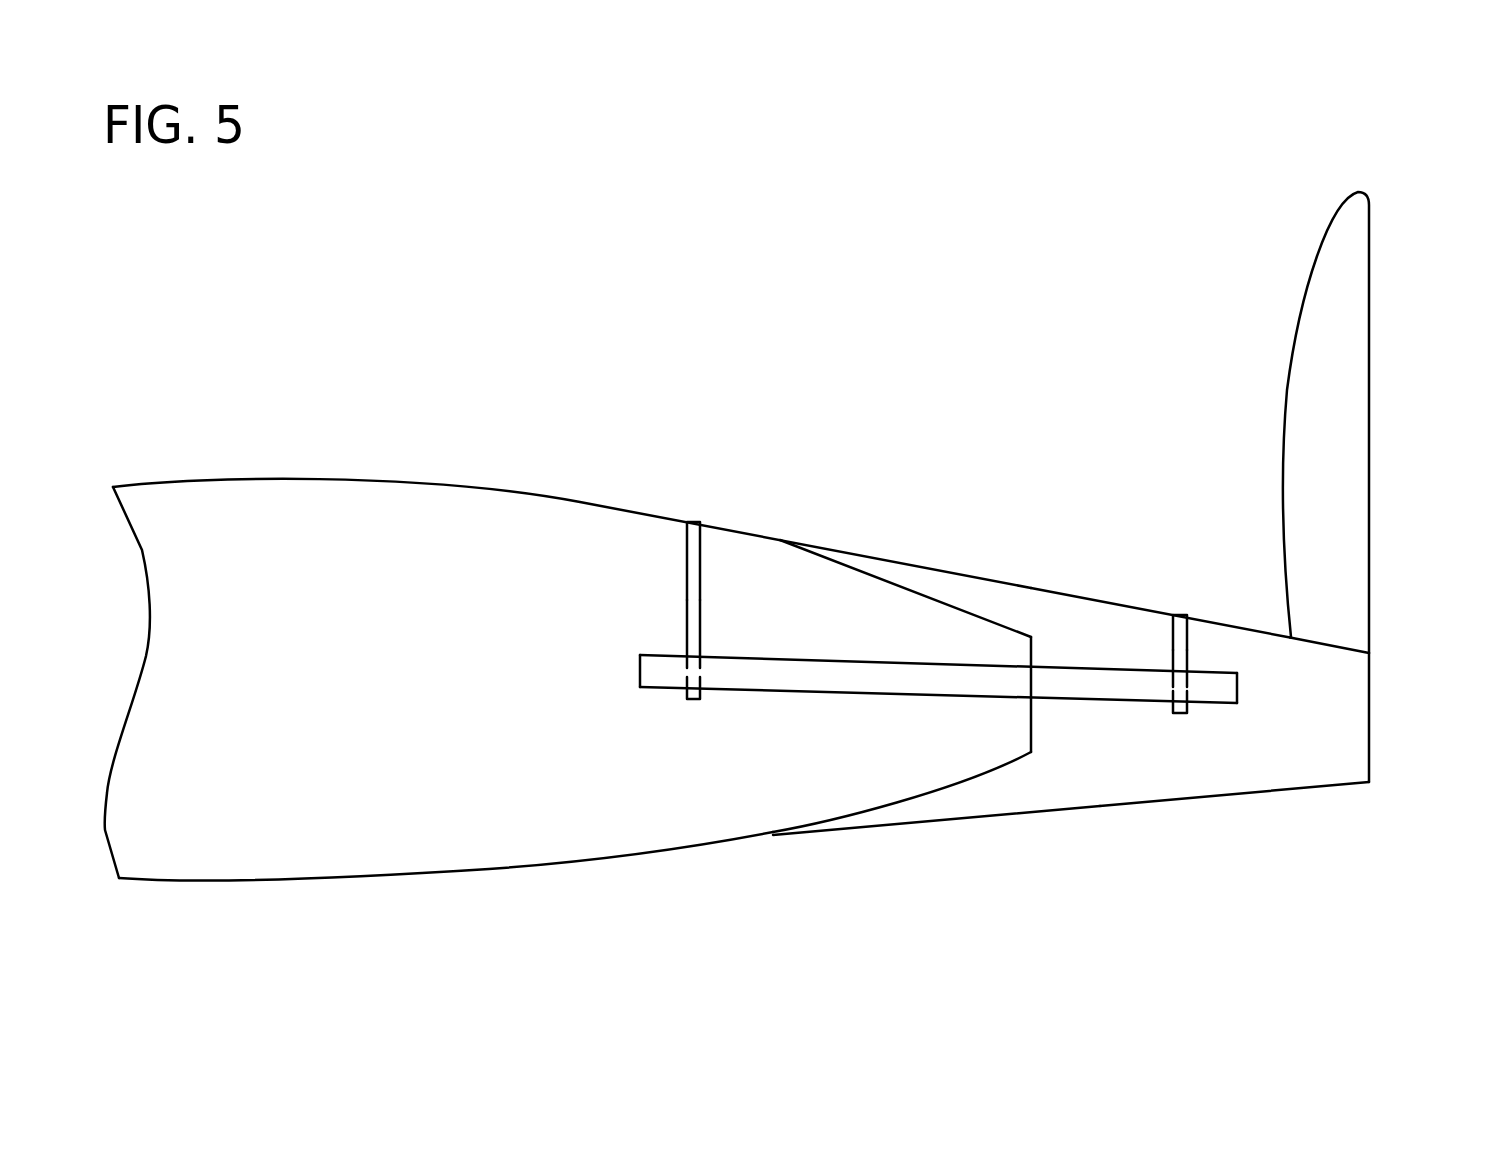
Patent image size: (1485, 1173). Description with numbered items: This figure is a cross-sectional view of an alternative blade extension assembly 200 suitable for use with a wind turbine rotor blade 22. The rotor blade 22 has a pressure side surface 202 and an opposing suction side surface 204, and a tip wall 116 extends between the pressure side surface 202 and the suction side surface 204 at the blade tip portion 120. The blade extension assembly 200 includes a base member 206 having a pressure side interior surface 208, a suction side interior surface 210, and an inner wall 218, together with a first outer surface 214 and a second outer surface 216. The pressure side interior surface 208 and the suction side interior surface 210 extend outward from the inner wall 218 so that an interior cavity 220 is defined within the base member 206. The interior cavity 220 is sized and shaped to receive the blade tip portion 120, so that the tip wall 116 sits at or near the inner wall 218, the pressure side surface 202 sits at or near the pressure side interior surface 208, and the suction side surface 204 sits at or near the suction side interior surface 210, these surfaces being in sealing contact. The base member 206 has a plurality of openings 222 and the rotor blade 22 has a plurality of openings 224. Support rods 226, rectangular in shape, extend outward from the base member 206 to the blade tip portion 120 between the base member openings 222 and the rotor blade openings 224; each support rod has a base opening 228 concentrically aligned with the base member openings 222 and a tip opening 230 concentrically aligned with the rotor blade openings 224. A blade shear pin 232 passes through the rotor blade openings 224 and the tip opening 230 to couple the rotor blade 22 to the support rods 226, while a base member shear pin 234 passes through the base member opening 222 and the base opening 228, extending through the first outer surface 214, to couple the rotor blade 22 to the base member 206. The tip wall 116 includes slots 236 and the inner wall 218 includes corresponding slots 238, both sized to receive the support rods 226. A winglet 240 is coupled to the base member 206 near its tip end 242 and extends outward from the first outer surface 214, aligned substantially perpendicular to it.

The rotor blade 22 is at (500, 386).
The blade extension assembly 200 is at (943, 298).
The pressure side surface 202 is at (355, 479).
The suction side surface 204 is at (362, 880).
The base member 206 is at (1174, 802).
The pressure side interior surface 208 is at (963, 607).
The suction side interior surface 210 is at (938, 798).
The first outer surface 214 is at (1120, 602).
The second outer surface 216 is at (1055, 812).
The inner wall 218 is at (1033, 657).
The interior cavity 220 is at (938, 711).
The base member openings 222 is at (1178, 615).
The rotor blade openings 224 is at (693, 520).
The support rods 226 is at (807, 693).
The base opening 228 is at (1188, 672).
The tip opening 230 is at (687, 655).
The blade shear pin 232 is at (701, 570).
The base member shear pin 234 is at (1173, 638).
The slots 236 is at (1030, 677).
The slots 238 is at (1033, 687).
The winglet 240 is at (1311, 265).
The tip end 242 is at (1337, 640).
The blade tip portion 120 is at (961, 696).
The tip wall 116 is at (1028, 733).